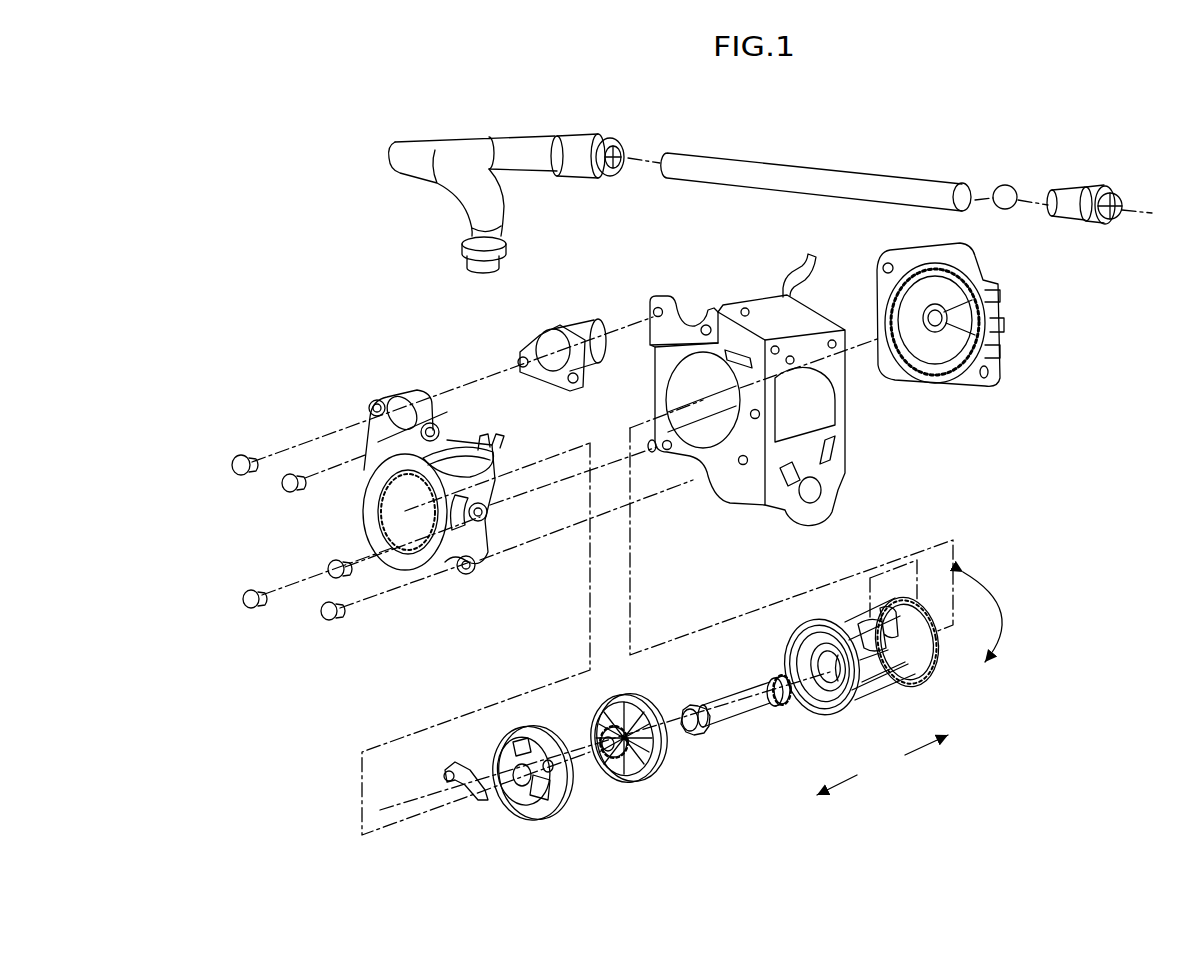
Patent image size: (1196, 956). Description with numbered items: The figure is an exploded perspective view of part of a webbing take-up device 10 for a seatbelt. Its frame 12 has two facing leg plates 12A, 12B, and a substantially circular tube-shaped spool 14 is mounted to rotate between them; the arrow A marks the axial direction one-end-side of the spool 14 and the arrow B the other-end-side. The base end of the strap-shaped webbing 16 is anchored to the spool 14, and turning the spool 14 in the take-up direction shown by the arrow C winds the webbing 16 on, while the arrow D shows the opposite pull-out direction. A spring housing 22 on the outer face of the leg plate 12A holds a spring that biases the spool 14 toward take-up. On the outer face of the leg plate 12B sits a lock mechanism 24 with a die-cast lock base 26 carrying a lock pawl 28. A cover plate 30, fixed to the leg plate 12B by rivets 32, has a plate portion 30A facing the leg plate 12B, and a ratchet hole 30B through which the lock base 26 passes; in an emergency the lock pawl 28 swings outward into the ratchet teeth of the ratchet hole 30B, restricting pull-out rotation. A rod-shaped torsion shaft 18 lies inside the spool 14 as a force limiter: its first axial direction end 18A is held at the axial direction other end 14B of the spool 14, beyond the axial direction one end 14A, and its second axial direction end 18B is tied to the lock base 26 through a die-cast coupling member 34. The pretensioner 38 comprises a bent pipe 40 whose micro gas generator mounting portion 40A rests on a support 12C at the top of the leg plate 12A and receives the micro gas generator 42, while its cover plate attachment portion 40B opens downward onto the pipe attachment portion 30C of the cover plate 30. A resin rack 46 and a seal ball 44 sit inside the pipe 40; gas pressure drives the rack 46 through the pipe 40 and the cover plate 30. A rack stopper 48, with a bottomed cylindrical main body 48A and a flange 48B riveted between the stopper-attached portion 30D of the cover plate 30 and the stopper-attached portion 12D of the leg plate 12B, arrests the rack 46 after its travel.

The webbing take-up device 10 is at (1112, 312).
The frame 12 is at (751, 374).
The leg plate 12A is at (765, 312).
The leg plate 12B is at (658, 366).
The support 12C is at (820, 284).
The stopper-attached portion 12D is at (700, 304).
The spool 14 is at (892, 680).
The axial direction one end 14A is at (823, 716).
The axial direction other end 14B is at (923, 680).
The webbing 16 is at (870, 590).
The torsion shaft 18 is at (745, 738).
The first axial direction end 18A is at (778, 705).
The second axial direction end 18B is at (700, 738).
The spring housing 22 is at (968, 253).
The lock mechanism 24 is at (531, 806).
The lock base 26 is at (570, 826).
The lock pawl 28 is at (446, 785).
The cover plate 30 is at (424, 433).
The plate portion 30A is at (378, 530).
The ratchet hole 30B is at (395, 490).
The pipe attachment portion 30C is at (496, 452).
The stopper-attached portion 30D is at (438, 400).
The rivets 32 is at (286, 494).
The coupling member 34 is at (643, 802).
The pretensioner 38 is at (408, 120).
The pipe 40 is at (510, 133).
The micro gas generator mounting portion 40A is at (580, 142).
The cover plate attachment portion 40B is at (462, 246).
The micro gas generator 42 is at (1075, 186).
The seal ball 44 is at (1005, 184).
The rack 46 is at (820, 168).
The rack stopper 48 is at (567, 312).
The main body 48A is at (565, 330).
The flange 48B is at (520, 354).
The arrow A is at (845, 785).
The arrow B is at (915, 760).
The arrow C is at (1000, 638).
The arrow D is at (990, 596).